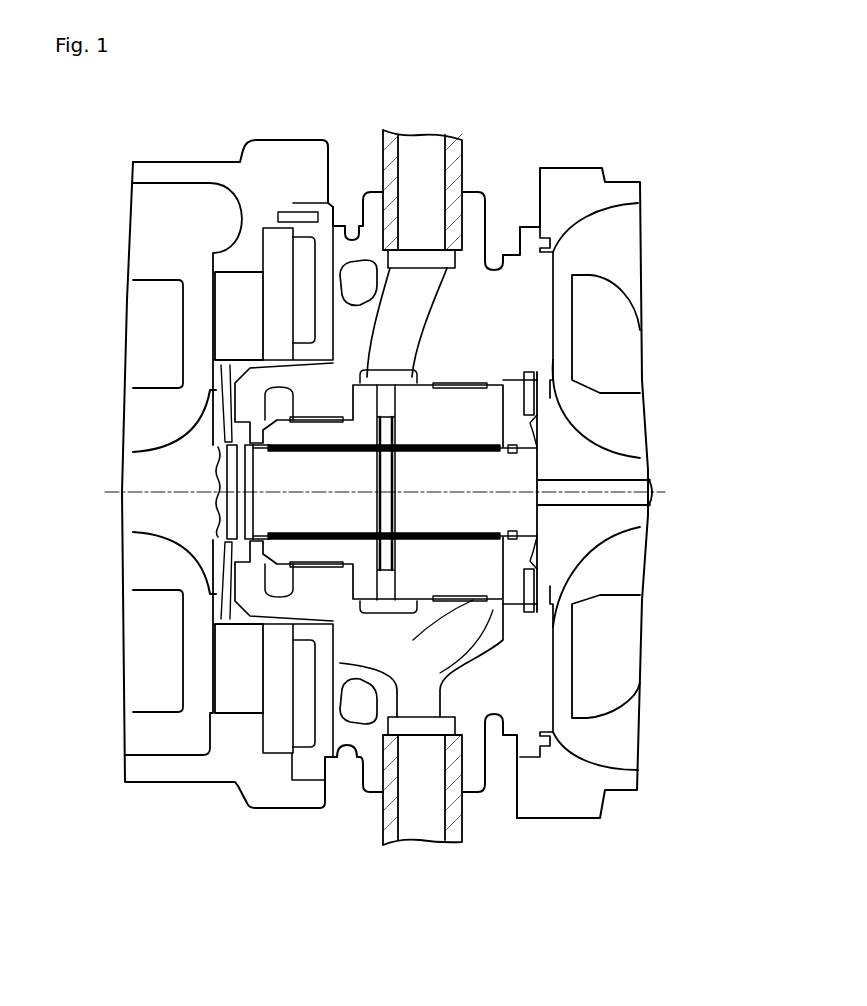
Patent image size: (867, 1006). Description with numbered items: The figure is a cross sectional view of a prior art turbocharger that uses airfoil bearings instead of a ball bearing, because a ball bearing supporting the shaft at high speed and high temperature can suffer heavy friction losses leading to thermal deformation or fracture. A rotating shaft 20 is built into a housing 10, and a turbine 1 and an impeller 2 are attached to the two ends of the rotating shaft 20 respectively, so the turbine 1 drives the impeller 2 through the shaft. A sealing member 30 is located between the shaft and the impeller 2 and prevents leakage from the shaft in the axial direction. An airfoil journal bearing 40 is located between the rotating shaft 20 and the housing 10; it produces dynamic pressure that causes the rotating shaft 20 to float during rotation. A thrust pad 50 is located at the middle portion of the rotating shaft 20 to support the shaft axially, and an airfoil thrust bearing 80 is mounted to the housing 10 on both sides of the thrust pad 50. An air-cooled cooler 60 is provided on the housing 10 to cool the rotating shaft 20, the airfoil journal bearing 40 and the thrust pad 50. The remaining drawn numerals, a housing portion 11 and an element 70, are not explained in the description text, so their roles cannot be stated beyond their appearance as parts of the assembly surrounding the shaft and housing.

The turbine 1 is at (610, 447).
The impeller 2 is at (185, 478).
The housing 10 is at (318, 420).
The compressor housing insert 11 is at (330, 315).
The rotating shaft 20 is at (610, 542).
The sealing member 30 is at (197, 500).
The airfoil journal bearing 40 is at (493, 517).
The thrust pad 50 is at (457, 407).
The air-cooled cooler 60 is at (422, 150).
The heat shield 70 is at (570, 580).
The airfoil thrust bearing 80 is at (570, 358).